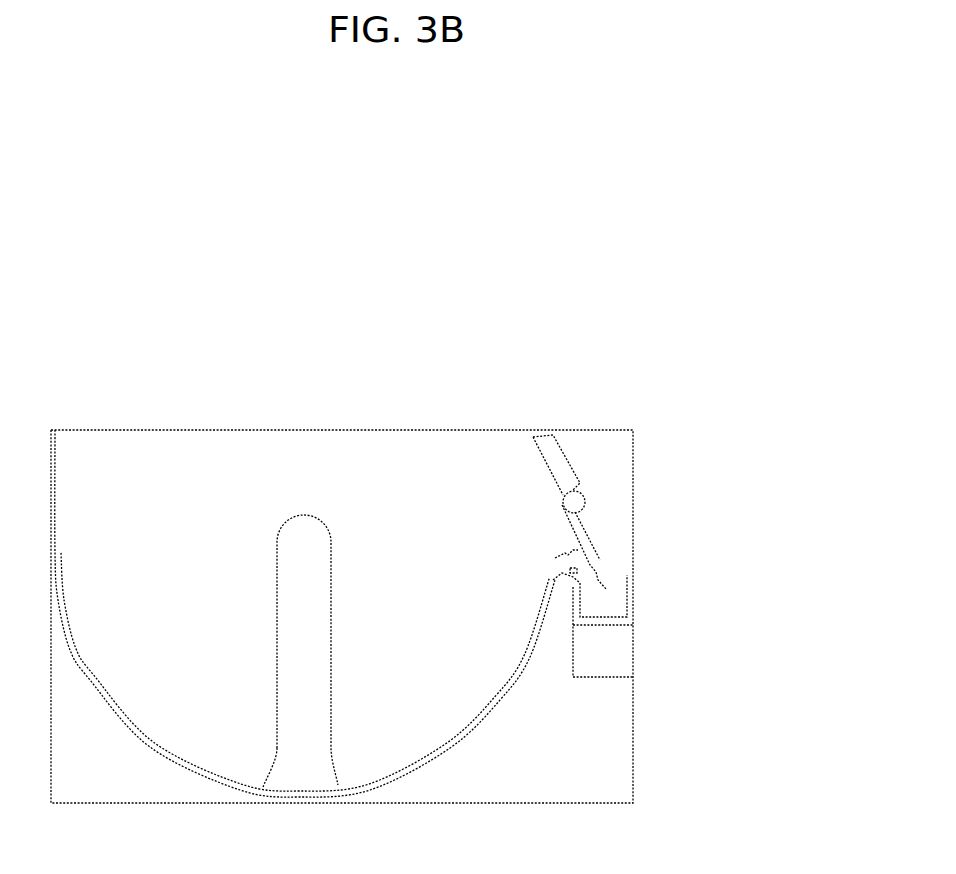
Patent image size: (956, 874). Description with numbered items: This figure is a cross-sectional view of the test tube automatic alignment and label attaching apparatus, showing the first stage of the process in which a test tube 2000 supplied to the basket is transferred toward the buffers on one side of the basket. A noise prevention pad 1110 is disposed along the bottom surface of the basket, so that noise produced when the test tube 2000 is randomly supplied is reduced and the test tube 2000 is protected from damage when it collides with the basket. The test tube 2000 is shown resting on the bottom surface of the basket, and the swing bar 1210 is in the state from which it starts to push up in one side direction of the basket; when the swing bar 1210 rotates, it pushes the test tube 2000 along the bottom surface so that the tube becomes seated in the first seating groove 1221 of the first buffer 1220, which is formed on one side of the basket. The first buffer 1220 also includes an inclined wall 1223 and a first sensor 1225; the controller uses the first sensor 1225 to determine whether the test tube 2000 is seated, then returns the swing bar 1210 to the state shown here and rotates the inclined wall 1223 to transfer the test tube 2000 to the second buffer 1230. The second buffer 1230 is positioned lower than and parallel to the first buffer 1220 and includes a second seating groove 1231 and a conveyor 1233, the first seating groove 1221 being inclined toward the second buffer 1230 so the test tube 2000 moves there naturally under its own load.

The noise prevention pad 1110 is at (152, 745).
The swing bar 1210 is at (297, 698).
The test tube 2000 is at (363, 752).
The first buffer 1220 is at (657, 512).
The first seating groove 1221 is at (623, 512).
The inclined wall 1223 is at (585, 505).
The first sensor 1225 is at (578, 550).
The second buffer 1230 is at (696, 626).
The second seating groove 1231 is at (598, 583).
The conveyor 1233 is at (605, 607).